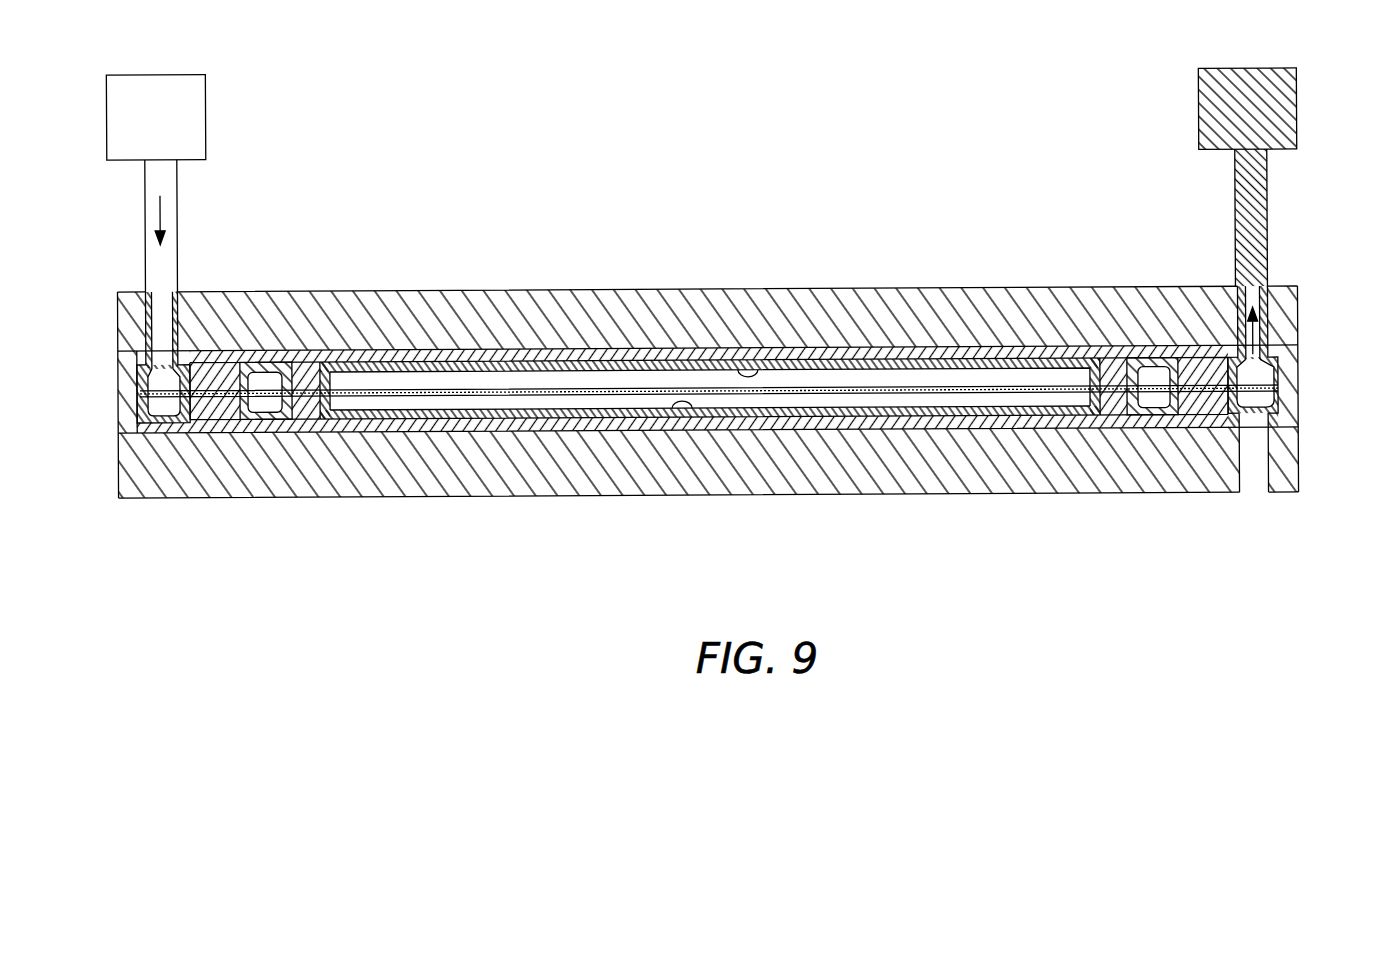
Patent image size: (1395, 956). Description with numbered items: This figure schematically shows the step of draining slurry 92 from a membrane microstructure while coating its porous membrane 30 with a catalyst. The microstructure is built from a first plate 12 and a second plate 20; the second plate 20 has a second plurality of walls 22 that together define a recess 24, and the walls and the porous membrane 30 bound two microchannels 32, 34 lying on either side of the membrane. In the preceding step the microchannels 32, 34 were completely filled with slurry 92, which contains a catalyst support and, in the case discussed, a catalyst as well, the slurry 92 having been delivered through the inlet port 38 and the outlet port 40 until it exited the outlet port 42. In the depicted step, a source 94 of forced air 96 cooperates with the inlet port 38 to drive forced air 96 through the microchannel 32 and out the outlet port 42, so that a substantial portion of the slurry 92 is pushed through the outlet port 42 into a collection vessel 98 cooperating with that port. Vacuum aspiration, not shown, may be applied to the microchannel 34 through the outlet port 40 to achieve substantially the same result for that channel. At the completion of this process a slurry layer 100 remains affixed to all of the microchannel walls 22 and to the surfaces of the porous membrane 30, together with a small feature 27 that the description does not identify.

The first plate 12 is at (372, 288).
The second plate 20 is at (890, 470).
The second plurality of walls 22 is at (493, 350).
The recess 24 is at (973, 300).
The protrusion 27 is at (748, 370).
The porous membrane 30 is at (840, 387).
The microchannel 32 is at (601, 366).
The microchannel 34 is at (600, 415).
The inlet port 38 is at (152, 282).
The outlet port 40 is at (1265, 484).
The outlet port 42 is at (1251, 282).
The slurry 92 is at (1268, 181).
The source of forced air 94 is at (200, 110).
The forced air 96 is at (145, 186).
The collection vessel 98 is at (1298, 104).
The slurry layer 100 is at (266, 358).